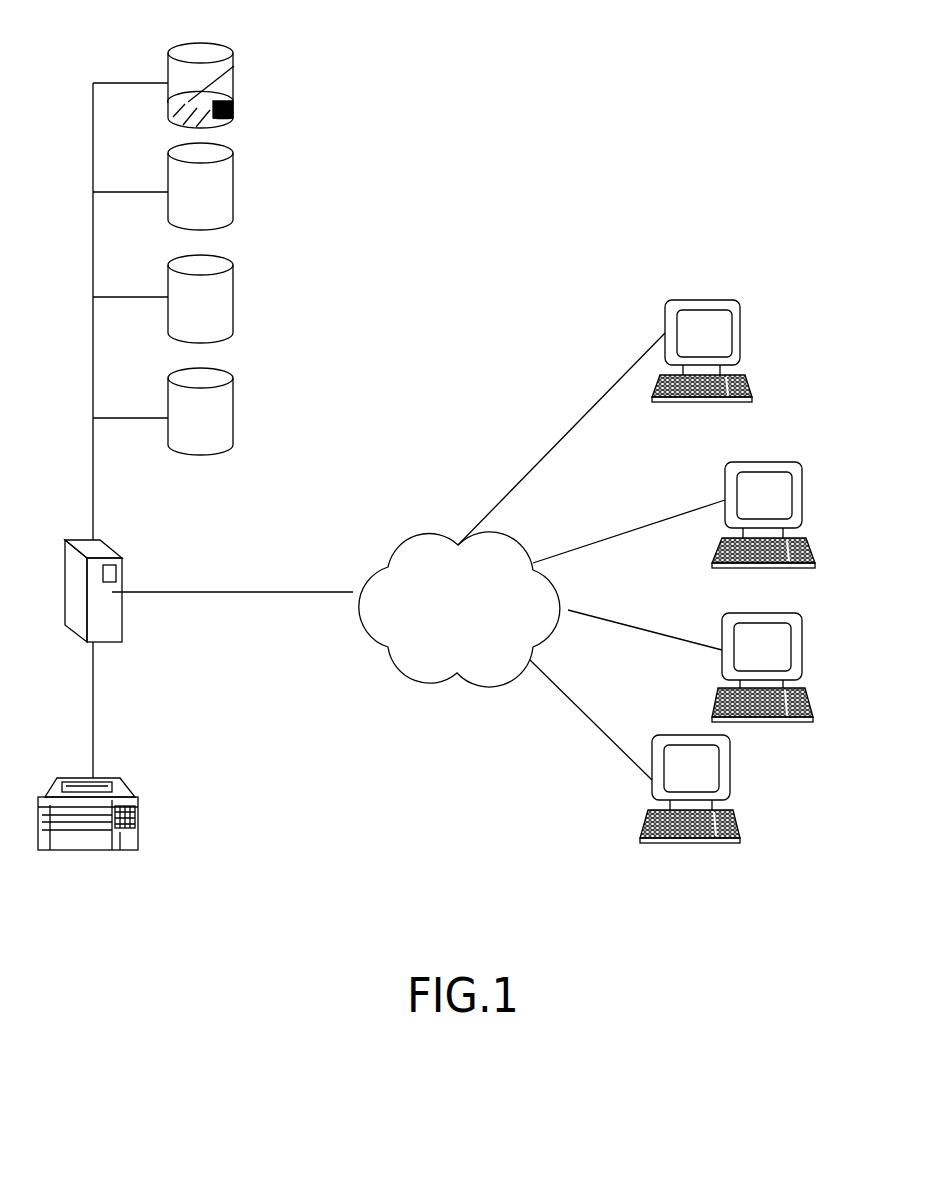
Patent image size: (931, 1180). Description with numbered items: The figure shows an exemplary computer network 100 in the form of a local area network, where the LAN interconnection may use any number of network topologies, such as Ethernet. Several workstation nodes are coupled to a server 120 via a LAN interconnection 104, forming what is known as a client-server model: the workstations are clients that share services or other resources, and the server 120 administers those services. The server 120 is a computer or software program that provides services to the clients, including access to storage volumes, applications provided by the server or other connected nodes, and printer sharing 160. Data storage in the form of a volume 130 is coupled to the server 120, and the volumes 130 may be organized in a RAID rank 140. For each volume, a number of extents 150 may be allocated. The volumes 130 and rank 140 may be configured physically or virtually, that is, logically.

The computer network 100 is at (569, 155).
The LAN interconnection 104 is at (439, 635).
The server 120 is at (105, 628).
The volume 130 is at (180, 427).
The RAID rank 140 is at (267, 70).
The extents 150 is at (234, 66).
The printer sharing 160 is at (130, 850).